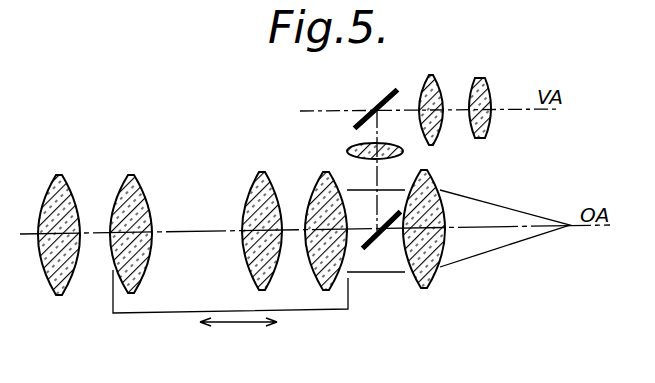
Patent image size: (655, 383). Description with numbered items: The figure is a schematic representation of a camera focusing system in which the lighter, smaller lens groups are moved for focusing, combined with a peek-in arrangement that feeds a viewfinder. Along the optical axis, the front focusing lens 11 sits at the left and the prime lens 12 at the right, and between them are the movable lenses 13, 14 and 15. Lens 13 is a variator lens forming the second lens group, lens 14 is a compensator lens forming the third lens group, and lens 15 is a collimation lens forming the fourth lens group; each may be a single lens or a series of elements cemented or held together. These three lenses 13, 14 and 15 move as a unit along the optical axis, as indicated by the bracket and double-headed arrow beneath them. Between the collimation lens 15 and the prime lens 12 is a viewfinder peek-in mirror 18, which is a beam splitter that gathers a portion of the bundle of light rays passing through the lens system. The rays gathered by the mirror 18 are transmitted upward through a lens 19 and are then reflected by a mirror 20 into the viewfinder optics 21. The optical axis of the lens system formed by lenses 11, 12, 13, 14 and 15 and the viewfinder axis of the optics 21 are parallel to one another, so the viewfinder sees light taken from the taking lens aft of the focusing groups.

The front focusing lens 11 is at (70, 150).
The prime lens 12 is at (419, 172).
The variator lens 13 is at (139, 150).
The compensator lens 14 is at (262, 172).
The collimation lens 15 is at (329, 172).
The viewfinder peek-in mirror 18 is at (378, 238).
The lens 19 is at (360, 142).
The mirror 20 is at (384, 95).
The viewfinder optics 21 is at (491, 72).